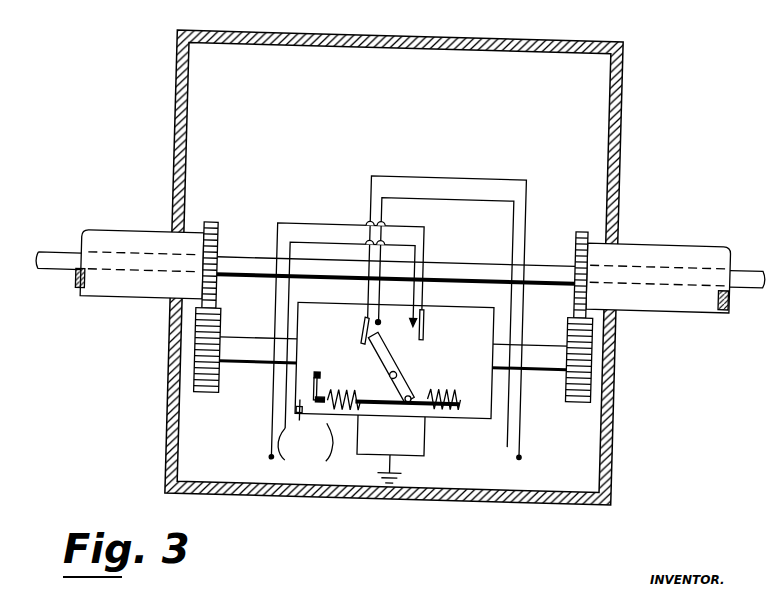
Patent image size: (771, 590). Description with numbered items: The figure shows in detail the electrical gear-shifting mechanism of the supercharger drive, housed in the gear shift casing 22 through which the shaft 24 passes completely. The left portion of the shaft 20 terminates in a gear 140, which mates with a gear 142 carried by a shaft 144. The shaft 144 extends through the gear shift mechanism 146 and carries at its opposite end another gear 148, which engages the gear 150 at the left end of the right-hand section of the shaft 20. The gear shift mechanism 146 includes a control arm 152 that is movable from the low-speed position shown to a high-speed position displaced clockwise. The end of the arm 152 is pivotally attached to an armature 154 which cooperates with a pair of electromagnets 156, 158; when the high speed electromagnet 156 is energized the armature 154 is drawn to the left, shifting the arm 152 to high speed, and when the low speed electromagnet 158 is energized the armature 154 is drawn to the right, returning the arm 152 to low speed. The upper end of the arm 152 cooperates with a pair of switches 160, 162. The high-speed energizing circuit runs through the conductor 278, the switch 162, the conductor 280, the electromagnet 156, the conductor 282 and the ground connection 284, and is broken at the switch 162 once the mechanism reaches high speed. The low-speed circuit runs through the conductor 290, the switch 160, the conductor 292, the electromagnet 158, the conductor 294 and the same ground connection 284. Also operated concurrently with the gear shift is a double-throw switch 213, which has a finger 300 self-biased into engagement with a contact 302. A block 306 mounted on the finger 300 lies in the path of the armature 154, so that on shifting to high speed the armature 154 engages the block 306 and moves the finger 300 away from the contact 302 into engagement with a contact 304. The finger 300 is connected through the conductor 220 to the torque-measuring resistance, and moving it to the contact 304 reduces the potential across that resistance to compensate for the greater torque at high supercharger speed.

The gear shift casing 22 is at (617, 86).
The shaft 24 is at (44, 280).
The shaft 20 is at (110, 304).
The gear 140 is at (217, 241).
The gear 142 is at (204, 397).
The shaft 144 is at (224, 367).
The gear shift mechanism 146 is at (459, 358).
The gear 148 is at (586, 397).
The gear 150 is at (581, 227).
The control arm 152 is at (401, 373).
The armature 154 is at (406, 420).
The high speed electromagnet 156 is at (333, 414).
The low speed electromagnet 158 is at (445, 404).
The switch 160 is at (359, 327).
The switch 162 is at (434, 325).
The double-throw switch 213 is at (318, 368).
The conductor 220 is at (300, 413).
The conductor 278 is at (276, 438).
The conductor 280 is at (349, 350).
The conductor 282 is at (362, 447).
The ground connection 284 is at (402, 470).
The conductor 290 is at (525, 441).
The conductor 292 is at (512, 444).
The conductor 294 is at (429, 449).
The finger 300 is at (319, 403).
The contact 302 is at (334, 451).
The contact 304 is at (281, 454).
The block 306 is at (331, 374).